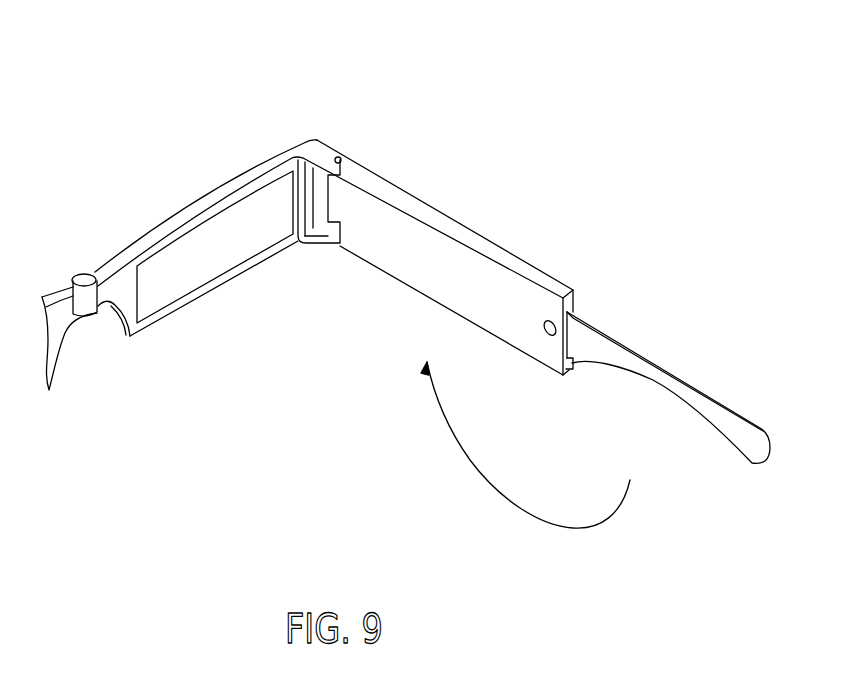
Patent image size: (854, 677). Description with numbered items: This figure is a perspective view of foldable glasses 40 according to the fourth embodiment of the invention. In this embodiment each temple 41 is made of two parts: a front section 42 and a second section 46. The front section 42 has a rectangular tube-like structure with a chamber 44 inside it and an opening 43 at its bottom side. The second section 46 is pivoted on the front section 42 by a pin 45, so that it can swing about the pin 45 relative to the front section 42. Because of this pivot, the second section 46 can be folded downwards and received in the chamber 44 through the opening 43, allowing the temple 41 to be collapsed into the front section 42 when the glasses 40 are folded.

The foldable glasses 40 is at (420, 145).
The temple 41 is at (536, 304).
The front section 42 is at (484, 304).
The opening 43 is at (588, 379).
The chamber 44 is at (558, 371).
The pin 45 is at (546, 338).
The second section 46 is at (668, 342).